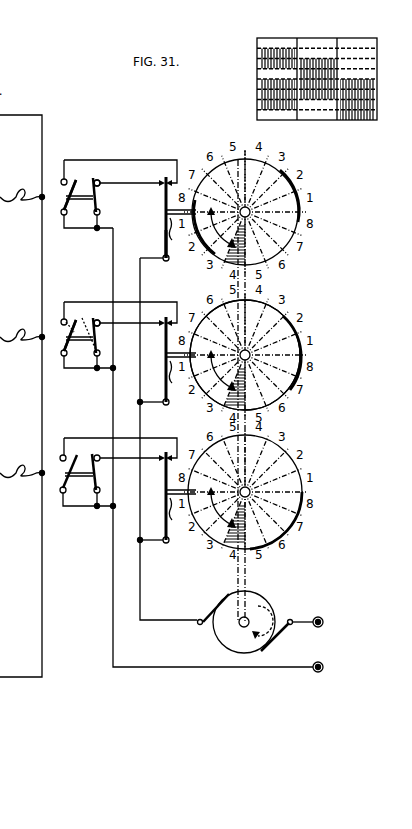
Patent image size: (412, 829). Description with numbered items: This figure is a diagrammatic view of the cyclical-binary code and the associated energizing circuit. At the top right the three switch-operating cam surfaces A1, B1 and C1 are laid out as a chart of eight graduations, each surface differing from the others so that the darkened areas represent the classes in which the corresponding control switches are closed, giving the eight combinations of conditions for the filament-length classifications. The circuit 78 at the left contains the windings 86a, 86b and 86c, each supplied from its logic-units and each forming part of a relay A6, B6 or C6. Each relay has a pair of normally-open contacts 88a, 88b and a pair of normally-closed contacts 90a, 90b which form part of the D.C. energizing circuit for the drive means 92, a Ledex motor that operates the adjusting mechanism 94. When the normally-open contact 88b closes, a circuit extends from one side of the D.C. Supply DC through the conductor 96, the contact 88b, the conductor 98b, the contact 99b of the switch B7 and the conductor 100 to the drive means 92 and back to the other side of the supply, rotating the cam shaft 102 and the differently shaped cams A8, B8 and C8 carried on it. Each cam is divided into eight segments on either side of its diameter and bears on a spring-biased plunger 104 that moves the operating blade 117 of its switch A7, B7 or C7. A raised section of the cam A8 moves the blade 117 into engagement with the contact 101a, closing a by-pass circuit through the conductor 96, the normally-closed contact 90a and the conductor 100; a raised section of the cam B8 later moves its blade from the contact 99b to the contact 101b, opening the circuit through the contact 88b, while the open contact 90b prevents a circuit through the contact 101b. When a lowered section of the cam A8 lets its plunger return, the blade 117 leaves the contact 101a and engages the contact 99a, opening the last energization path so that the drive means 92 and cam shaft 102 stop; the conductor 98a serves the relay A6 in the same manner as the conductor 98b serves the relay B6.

The switch operating cam surface A1 is at (312, 85).
The switch operating cam surface B1 is at (316, 127).
The switch operating cam surface C1 is at (356, 127).
The control circuit 78 is at (42, 565).
The relay winding 86a is at (17, 204).
The winding of relay 86b is at (17, 344).
The relay winding 86c is at (17, 480).
The relay A6 is at (87, 206).
The relay B6 is at (88, 349).
The relay C6 is at (88, 485).
The normally-open contacts 88a is at (60, 182).
The normally-open contacts 88b is at (60, 322).
The normally-closed contact 90a is at (99, 182).
The normally-closed contacts 90b is at (97, 320).
The conductor 98a is at (104, 161).
The conductor 98b is at (146, 302).
The contact 101a is at (156, 187).
The contact 101b is at (156, 328).
The contact 99a is at (167, 181).
The contact 99b is at (167, 329).
The operating blade 117 is at (163, 250).
The spring-biased plunger 104 is at (167, 406).
The switch A7 is at (169, 224).
The switch B7 is at (171, 368).
The switch C7 is at (170, 505).
The cam A8 is at (302, 232).
The cam B8 is at (300, 377).
The cam C8 is at (300, 512).
The adjusting mechanism 94 is at (318, 318).
The conductor 96 is at (113, 290).
The conductor 100 is at (141, 425).
The cam shaft 102 is at (256, 577).
The drive means 92 is at (268, 606).
The D.C. Supply DC is at (340, 644).